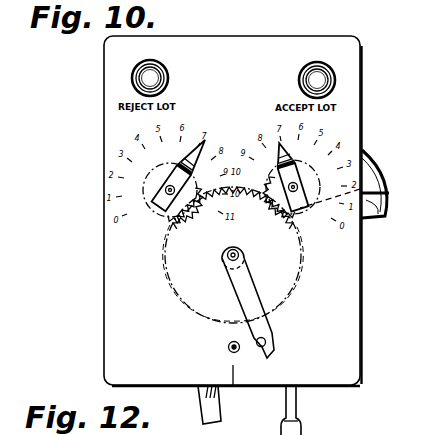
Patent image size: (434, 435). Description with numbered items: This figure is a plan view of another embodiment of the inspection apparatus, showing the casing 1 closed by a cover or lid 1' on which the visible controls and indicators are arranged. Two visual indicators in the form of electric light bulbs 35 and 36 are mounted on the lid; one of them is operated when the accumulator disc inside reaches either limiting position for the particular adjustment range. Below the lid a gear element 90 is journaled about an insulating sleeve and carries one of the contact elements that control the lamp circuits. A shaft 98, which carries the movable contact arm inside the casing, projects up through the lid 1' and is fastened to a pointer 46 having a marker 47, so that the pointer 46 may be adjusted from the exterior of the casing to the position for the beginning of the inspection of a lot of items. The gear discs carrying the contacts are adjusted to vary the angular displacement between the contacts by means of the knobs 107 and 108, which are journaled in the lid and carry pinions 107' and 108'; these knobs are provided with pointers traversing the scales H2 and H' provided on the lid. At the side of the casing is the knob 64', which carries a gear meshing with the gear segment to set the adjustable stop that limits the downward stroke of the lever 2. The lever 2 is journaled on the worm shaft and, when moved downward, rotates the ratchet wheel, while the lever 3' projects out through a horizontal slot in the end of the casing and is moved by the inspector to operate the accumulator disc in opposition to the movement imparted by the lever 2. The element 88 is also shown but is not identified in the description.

The electric light bulb 36 is at (167, 73).
The electric light bulb 35 is at (304, 80).
The cover or lid 1' is at (377, 61).
The casing 1 is at (381, 281).
The gear element 90 is at (176, 270).
The knob 108 is at (137, 181).
The pinion 108' is at (110, 204).
The scale H2 is at (134, 137).
The knob 107 is at (329, 169).
The pinion 107' is at (396, 193).
The scale H' is at (358, 117).
The side knob 88 is at (371, 165).
The knob 64' is at (394, 198).
The pointer 46 is at (255, 297).
The shaft 98 is at (232, 256).
The marker 47 is at (235, 374).
The lever 3' is at (220, 405).
The lever 2 is at (297, 405).